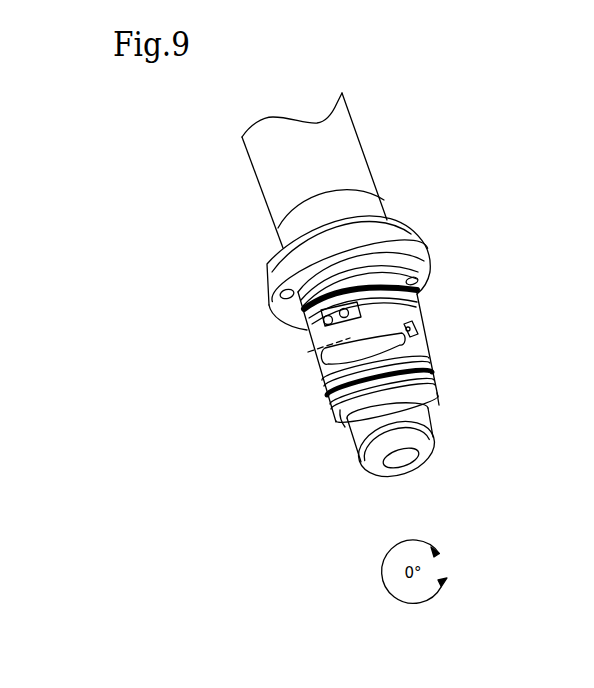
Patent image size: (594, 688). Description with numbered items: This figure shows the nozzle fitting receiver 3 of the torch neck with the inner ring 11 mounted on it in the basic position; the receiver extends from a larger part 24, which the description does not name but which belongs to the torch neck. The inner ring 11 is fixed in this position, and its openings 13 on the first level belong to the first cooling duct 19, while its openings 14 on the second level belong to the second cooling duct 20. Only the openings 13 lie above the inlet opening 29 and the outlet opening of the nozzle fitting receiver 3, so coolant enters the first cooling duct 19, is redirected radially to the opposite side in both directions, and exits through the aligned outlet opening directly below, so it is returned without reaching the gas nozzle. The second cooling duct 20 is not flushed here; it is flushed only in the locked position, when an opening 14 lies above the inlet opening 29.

The shaft 24 is at (338, 150).
The first cooling duct 19 is at (393, 305).
The openings 14 is at (412, 328).
The openings 13 is at (320, 316).
The inner ring 11 is at (435, 376).
The inlet opening 29 is at (300, 357).
The second cooling duct 20 is at (332, 373).
The nozzle fitting receiver 3 is at (427, 452).